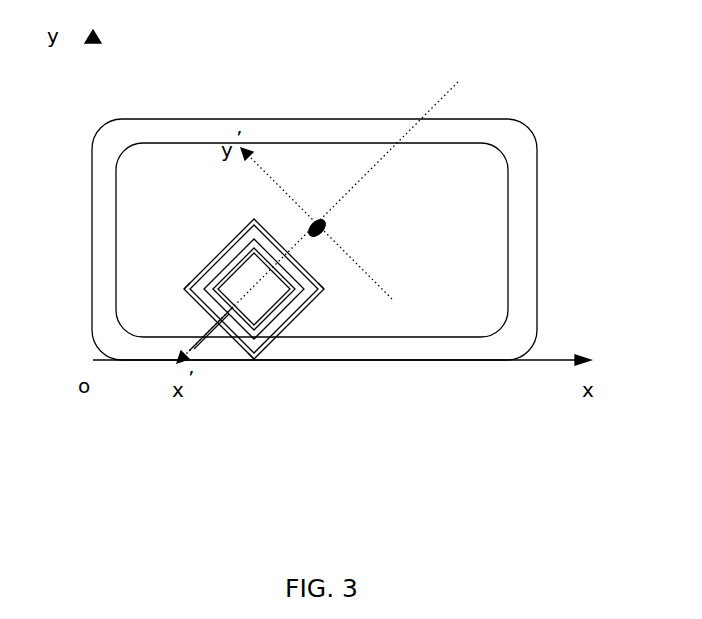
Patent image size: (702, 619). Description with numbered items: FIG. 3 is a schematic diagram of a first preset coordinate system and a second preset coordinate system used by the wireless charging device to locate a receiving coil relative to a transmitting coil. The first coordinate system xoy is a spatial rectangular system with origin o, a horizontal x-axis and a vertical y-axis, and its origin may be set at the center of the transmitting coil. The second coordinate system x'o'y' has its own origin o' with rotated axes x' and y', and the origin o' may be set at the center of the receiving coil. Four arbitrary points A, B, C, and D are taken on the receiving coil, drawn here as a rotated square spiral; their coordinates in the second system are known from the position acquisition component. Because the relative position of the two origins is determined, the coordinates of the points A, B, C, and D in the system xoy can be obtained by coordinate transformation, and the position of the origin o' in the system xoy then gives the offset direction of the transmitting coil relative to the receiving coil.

The point A on the receiving coil A is at (254, 276).
The point B on the receiving coil B is at (336, 289).
The point C on the receiving coil C is at (254, 370).
The point D on the receiving coil D is at (180, 282).
The origin of the coordinate system x'o'y' o' is at (325, 238).